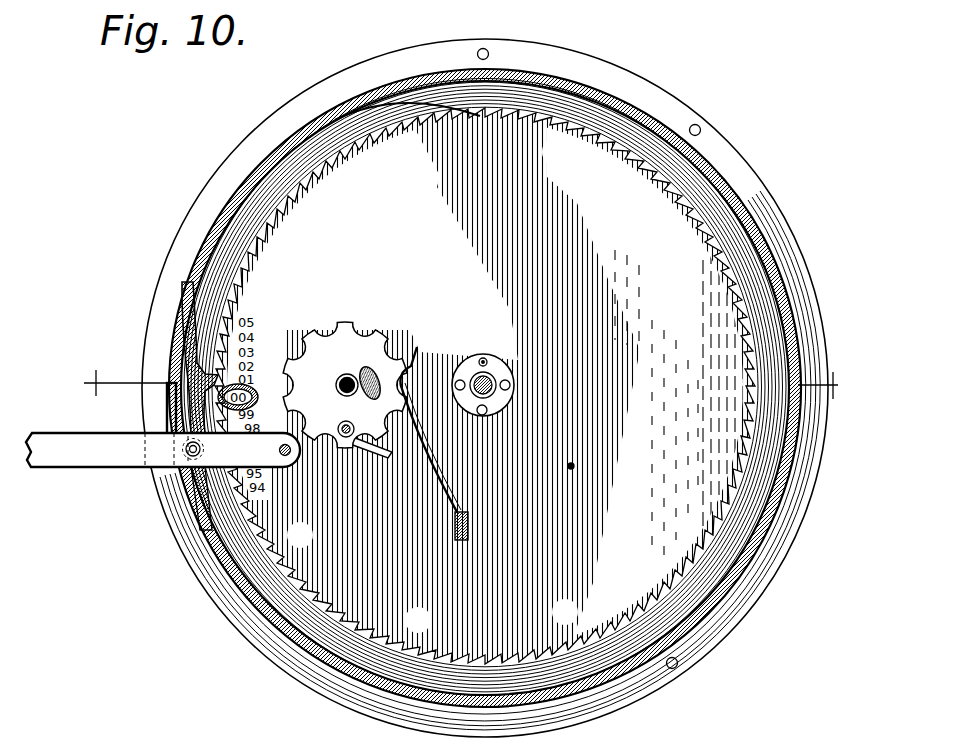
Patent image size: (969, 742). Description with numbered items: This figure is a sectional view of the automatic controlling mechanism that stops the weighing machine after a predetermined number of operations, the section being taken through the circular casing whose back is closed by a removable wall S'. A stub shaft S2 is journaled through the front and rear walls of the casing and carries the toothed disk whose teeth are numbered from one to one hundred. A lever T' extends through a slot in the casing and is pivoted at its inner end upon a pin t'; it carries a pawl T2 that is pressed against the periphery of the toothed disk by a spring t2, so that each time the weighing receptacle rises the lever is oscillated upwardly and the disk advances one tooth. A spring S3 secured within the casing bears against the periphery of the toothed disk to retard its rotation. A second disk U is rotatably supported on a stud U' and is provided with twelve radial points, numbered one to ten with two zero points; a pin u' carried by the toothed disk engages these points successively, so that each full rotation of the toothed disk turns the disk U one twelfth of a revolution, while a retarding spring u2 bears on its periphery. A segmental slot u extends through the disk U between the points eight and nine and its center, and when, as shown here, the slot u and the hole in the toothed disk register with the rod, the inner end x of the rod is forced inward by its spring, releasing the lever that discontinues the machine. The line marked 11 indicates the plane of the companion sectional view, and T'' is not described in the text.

The lever T' is at (489, 395).
The section line 11— 11 is at (459, 385).
The spring S3 is at (430, 100).
The spring t2 is at (188, 352).
The pawl T2 is at (173, 415).
The lever T'' is at (163, 471).
The pin u' is at (267, 450).
The pin t' is at (340, 468).
The inner end of the rod x is at (399, 459).
The second disk U is at (345, 356).
The stud U' is at (373, 339).
The segmental slot u is at (396, 336).
The retarding spring u2 is at (424, 356).
The stub shaft S2 is at (489, 372).
The removable wall S' is at (278, 342).